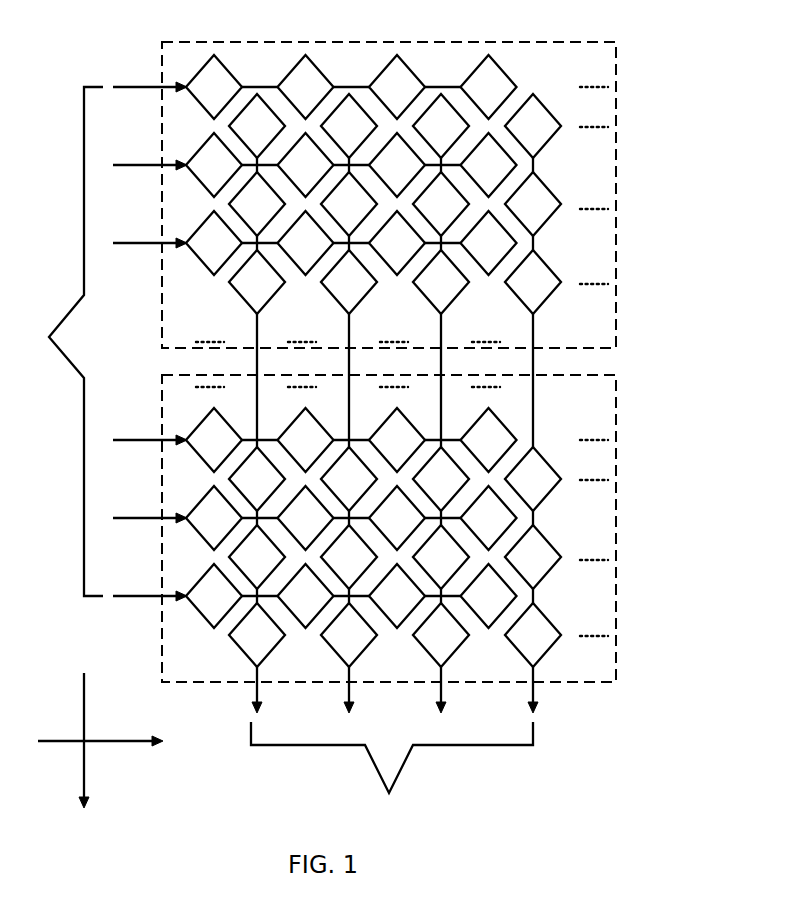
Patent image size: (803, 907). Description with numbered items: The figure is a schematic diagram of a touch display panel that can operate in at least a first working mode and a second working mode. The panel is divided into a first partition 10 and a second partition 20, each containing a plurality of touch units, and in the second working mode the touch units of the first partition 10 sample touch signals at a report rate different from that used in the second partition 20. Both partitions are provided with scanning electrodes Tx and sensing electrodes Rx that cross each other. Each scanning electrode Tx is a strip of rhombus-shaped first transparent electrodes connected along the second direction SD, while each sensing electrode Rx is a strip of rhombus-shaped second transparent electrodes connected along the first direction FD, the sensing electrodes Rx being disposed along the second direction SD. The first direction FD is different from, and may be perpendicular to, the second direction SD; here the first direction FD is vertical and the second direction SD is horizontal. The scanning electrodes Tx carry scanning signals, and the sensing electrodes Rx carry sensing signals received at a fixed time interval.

The first partition 10 is at (616, 42).
The second partition 20 is at (616, 375).
The scanning electrodes Tx is at (59, 341).
The sensing electrodes Rx is at (392, 775).
The second direction SD is at (100, 730).
The first direction FD is at (102, 740).